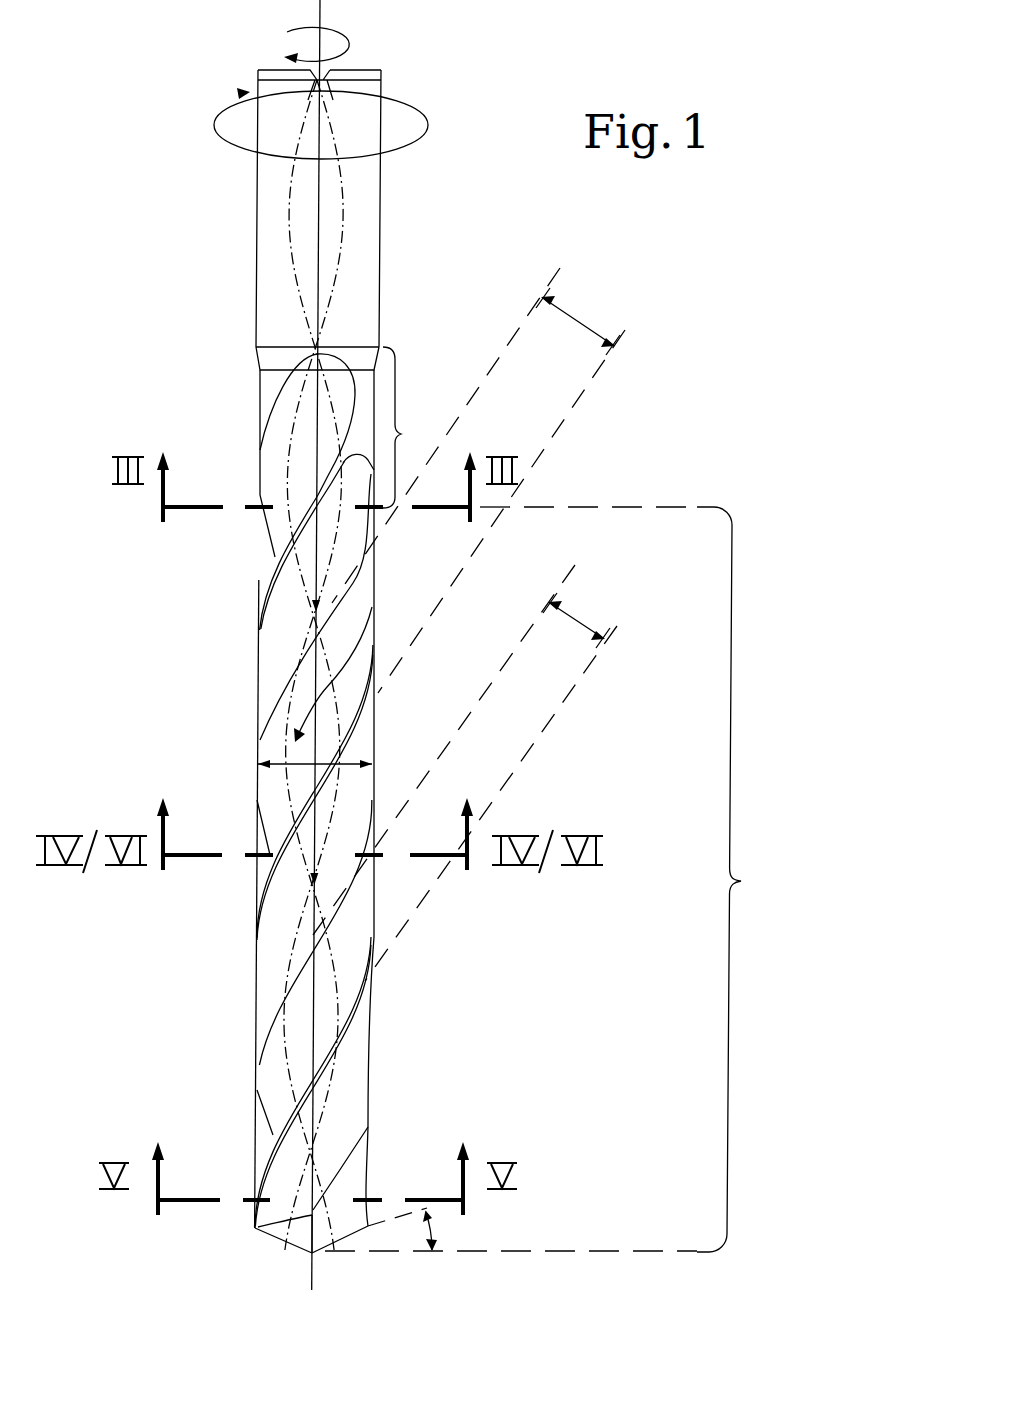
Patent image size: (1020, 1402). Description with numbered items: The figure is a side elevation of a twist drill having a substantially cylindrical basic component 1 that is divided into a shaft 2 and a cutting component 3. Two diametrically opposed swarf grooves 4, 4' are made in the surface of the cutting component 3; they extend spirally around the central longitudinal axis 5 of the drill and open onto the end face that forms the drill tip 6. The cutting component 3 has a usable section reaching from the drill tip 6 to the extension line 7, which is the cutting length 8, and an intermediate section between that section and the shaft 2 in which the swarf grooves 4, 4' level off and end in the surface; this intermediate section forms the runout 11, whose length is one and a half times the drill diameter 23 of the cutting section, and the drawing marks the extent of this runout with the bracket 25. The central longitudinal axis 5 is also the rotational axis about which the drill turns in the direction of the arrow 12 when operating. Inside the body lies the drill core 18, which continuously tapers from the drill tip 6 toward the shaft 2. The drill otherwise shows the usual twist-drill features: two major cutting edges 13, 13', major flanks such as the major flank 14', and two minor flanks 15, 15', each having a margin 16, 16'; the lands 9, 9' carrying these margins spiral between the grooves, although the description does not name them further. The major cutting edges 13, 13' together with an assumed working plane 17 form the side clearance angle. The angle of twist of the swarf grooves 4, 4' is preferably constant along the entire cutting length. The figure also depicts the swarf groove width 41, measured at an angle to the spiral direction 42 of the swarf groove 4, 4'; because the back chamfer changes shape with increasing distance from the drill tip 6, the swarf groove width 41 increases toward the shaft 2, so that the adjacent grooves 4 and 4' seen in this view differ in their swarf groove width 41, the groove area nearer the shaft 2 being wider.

The basic component 1 is at (386, 270).
The shaft 2 is at (257, 242).
The cutting component 3 is at (258, 676).
The swarf groove 4 is at (355, 1168).
The swarf groove 4' is at (316, 769).
The central longitudinal axis 5 is at (302, 1020).
The drill tip 6 is at (306, 1257).
The extension line 7 is at (622, 507).
The cutting length 8 is at (741, 881).
The land 9 is at (379, 798).
The land 9' is at (340, 904).
The runout 11 is at (261, 437).
The arrow 12 is at (420, 108).
The major cutting edge 13 is at (369, 1249).
The major cutting edge 13' is at (251, 1243).
The major flank 14' is at (257, 1256).
The minor flank 15 is at (284, 796).
The minor flank 15' is at (284, 1085).
The margin 16 is at (334, 792).
The margin 16' is at (279, 1082).
The working plane 17 is at (556, 1252).
The drill core 18 is at (300, 453).
The drill diameter 23 is at (290, 787).
The flute run-out length 25 is at (401, 433).
The swarf groove width 41 is at (582, 323).
The spiral direction 42 is at (340, 668).